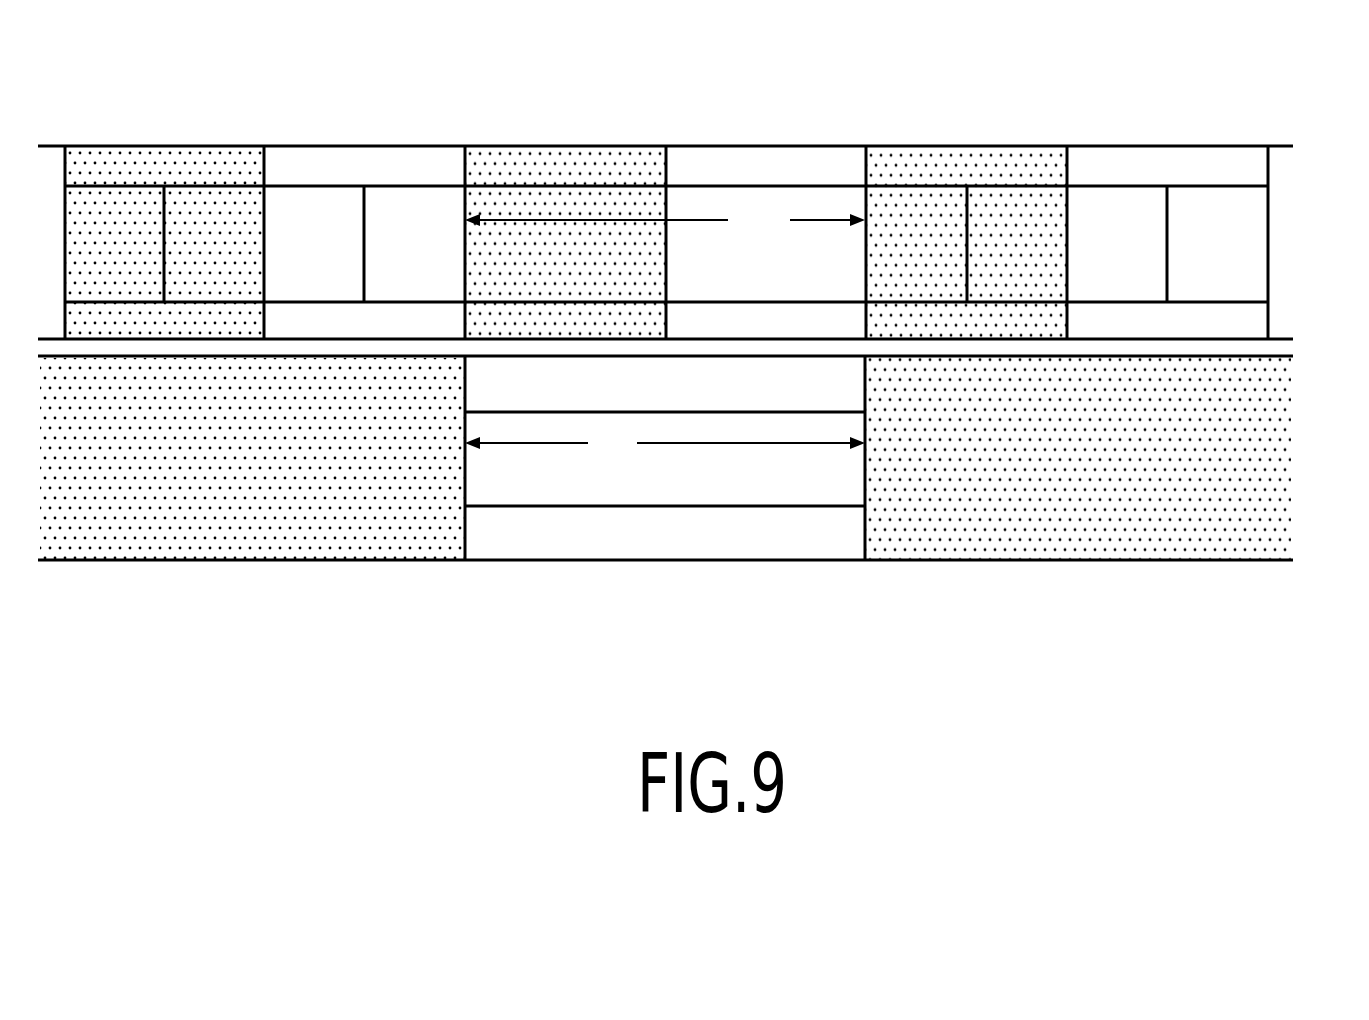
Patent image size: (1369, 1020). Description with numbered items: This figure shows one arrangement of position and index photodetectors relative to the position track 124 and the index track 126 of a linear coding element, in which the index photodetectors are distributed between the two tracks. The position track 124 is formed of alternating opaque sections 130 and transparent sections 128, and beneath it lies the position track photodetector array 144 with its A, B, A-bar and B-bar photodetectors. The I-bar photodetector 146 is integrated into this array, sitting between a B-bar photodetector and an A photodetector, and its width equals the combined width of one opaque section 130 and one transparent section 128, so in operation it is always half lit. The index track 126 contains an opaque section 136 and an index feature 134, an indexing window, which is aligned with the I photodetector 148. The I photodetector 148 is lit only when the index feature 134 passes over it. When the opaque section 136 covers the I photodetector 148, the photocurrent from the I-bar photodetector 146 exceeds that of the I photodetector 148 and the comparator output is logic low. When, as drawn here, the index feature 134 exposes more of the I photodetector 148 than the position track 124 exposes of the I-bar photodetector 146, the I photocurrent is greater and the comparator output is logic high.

The position track 124 is at (1330, 232).
The index track 126 is at (1334, 496).
The transparent section 128 is at (345, 146).
The opaque section 130 is at (148, 146).
The index feature 134 is at (703, 574).
The opaque section of the index track 136 is at (332, 574).
The position track photodetector array 144 is at (89, 290).
The I/ photodetector 146 is at (686, 290).
The I photodetector 148 is at (689, 500).